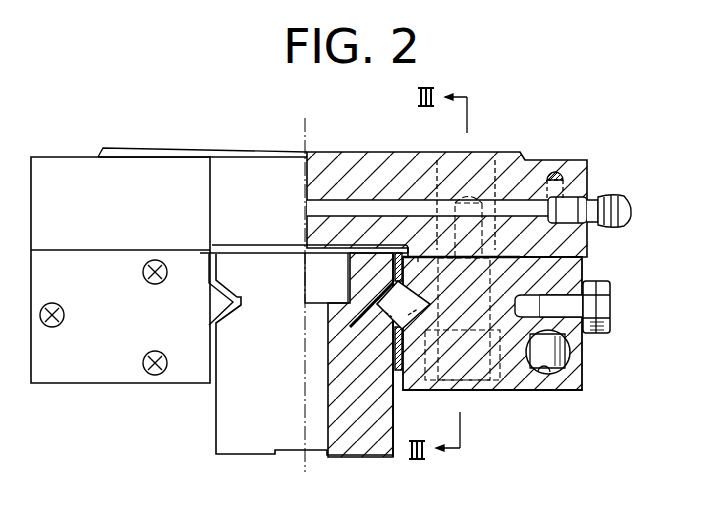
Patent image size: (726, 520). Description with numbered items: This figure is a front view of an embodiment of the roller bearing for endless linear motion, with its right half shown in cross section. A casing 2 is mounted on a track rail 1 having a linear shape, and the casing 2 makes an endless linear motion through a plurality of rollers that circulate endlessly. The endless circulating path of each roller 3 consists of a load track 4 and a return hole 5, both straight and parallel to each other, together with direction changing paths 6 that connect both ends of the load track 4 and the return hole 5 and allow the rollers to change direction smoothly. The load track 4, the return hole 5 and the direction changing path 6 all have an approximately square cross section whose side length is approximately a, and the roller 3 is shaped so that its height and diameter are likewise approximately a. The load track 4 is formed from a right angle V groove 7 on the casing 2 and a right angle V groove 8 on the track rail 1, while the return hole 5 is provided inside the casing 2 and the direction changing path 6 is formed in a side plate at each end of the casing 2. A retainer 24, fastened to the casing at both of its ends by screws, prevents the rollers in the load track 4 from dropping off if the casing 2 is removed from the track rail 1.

The track rail 1 is at (263, 407).
The casing 2 is at (180, 215).
The roller 3 is at (397, 281).
The load track 4 is at (414, 386).
The return hole 5 is at (554, 387).
The direction changing path 6 is at (516, 390).
The right angle V groove 7 is at (418, 262).
The right angle V groove 8 is at (378, 306).
The retainer 24 is at (410, 275).